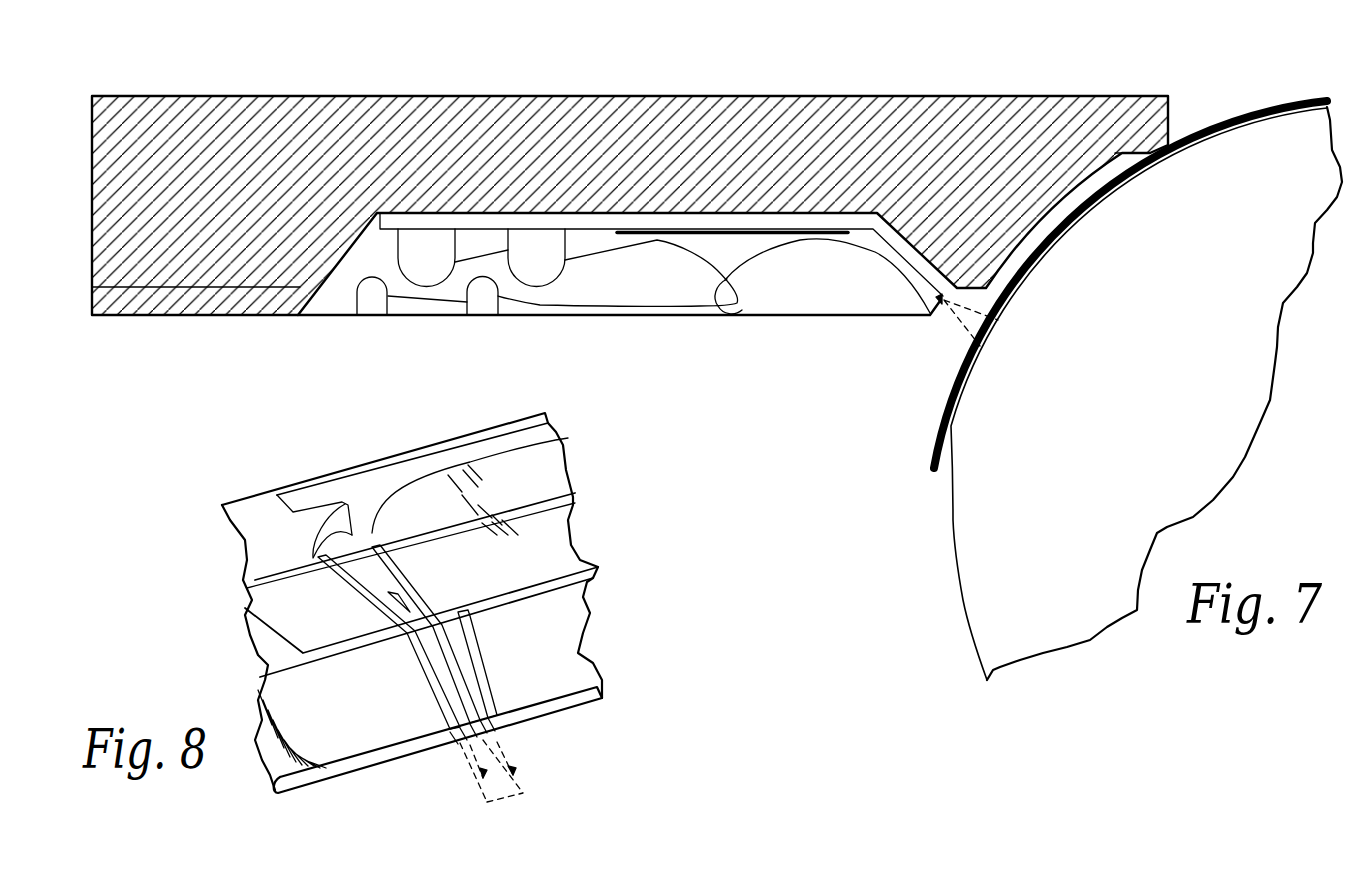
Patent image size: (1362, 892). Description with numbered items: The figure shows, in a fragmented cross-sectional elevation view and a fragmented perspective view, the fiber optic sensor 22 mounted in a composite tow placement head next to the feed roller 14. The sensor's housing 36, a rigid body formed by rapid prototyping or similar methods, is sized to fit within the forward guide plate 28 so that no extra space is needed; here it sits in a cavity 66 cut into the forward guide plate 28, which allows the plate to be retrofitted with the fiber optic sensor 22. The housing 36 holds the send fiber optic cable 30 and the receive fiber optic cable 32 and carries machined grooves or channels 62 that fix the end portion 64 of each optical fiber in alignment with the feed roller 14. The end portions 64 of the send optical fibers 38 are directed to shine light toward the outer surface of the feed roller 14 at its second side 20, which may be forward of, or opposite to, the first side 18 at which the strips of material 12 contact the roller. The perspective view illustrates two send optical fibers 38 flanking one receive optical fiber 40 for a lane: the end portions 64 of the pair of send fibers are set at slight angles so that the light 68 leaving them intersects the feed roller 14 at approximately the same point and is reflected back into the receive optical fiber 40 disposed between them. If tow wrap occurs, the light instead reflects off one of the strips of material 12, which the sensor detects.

In FIG. 7, the strips of material 12 is at (935, 440).
In FIG. 7, the feed roller 14 is at (930, 577).
In FIG. 7, the first side of the feed roller 18 is at (1240, 110).
In FIG. 7, the second side of the feed roller 20 is at (1020, 272).
In FIG. 7, the fiber optic sensor 22 is at (808, 317).
In FIG. 8, the fiber optic sensor 22 is at (584, 718).
In FIG. 7, the forward guide plate 28 is at (345, 125).
In FIG. 7, the send fiber optic cable 30 is at (410, 249).
In FIG. 8, the send fiber optic cable 30 is at (378, 485).
In FIG. 7, the receive fiber optic cable 32 is at (371, 297).
In FIG. 7, the housing 36 is at (323, 305).
In FIG. 8, the housing 36 is at (283, 707).
In FIG. 8, the send optical fibers 38 is at (488, 680).
In FIG. 8, the receive optical fiber 40 is at (443, 620).
In FIG. 8, the grooves or channels 62 is at (348, 598).
In FIG. 7, the end portion 64 is at (727, 279).
In FIG. 8, the end portion 64 is at (450, 740).
In FIG. 7, the cavity 66 is at (485, 213).
In FIG. 7, the light 68 is at (958, 325).
In FIG. 8, the light 68 is at (510, 760).